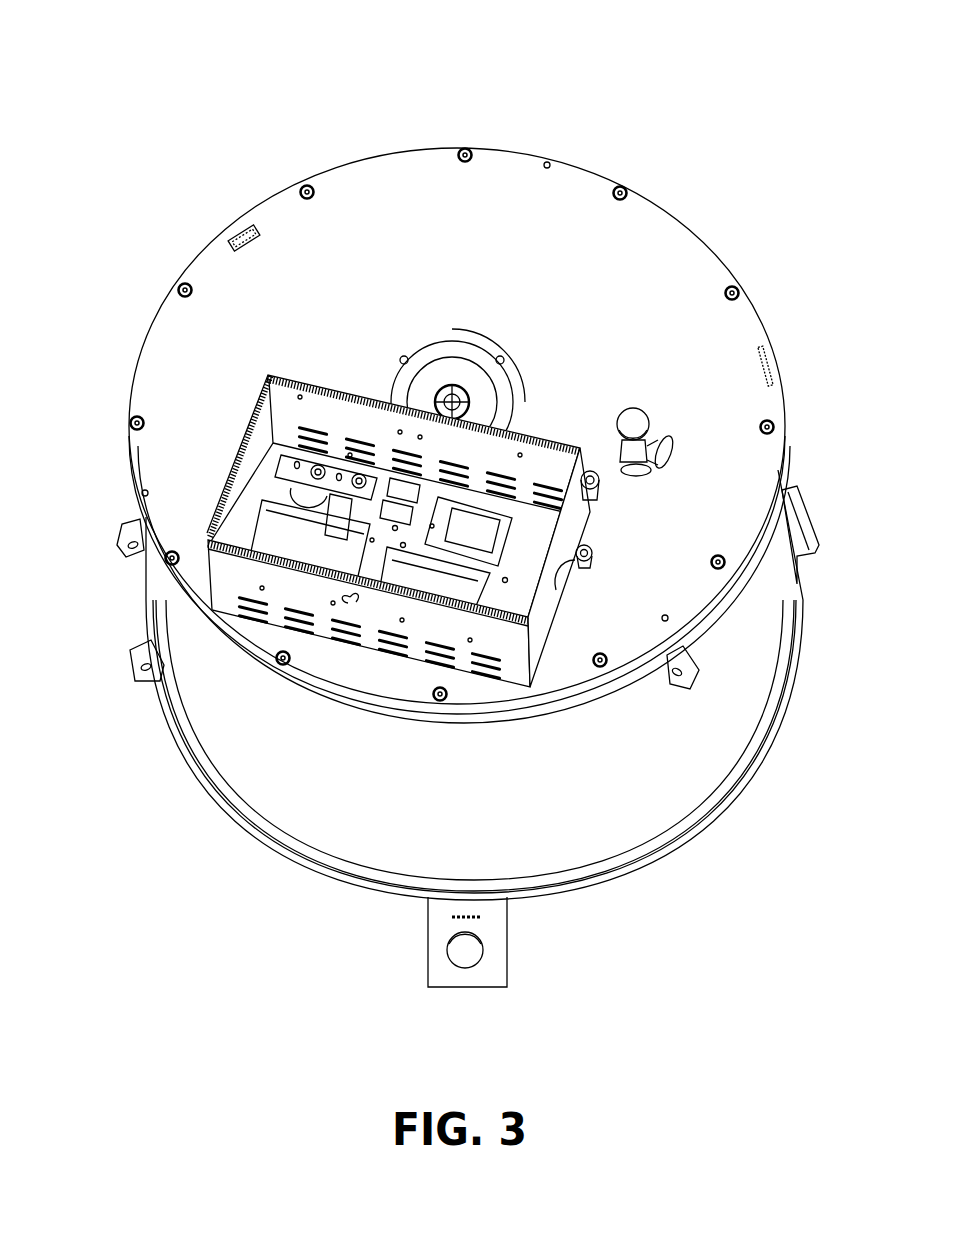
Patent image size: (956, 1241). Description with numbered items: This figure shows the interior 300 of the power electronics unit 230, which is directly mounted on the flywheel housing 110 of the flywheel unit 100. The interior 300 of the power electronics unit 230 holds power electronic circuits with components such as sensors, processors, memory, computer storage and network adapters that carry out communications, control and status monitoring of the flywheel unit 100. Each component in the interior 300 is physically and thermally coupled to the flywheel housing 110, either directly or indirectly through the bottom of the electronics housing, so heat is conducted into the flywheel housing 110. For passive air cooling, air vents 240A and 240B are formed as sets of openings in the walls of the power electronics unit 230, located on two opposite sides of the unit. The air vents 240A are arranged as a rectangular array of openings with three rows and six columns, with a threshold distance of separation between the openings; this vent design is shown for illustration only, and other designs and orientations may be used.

The flywheel unit 100 is at (253, 118).
The flywheel housing 110 is at (278, 775).
The power electronics unit 230 is at (512, 520).
The interior 300 is at (462, 522).
The air vents 240A is at (508, 482).
The air vents 240B is at (447, 667).